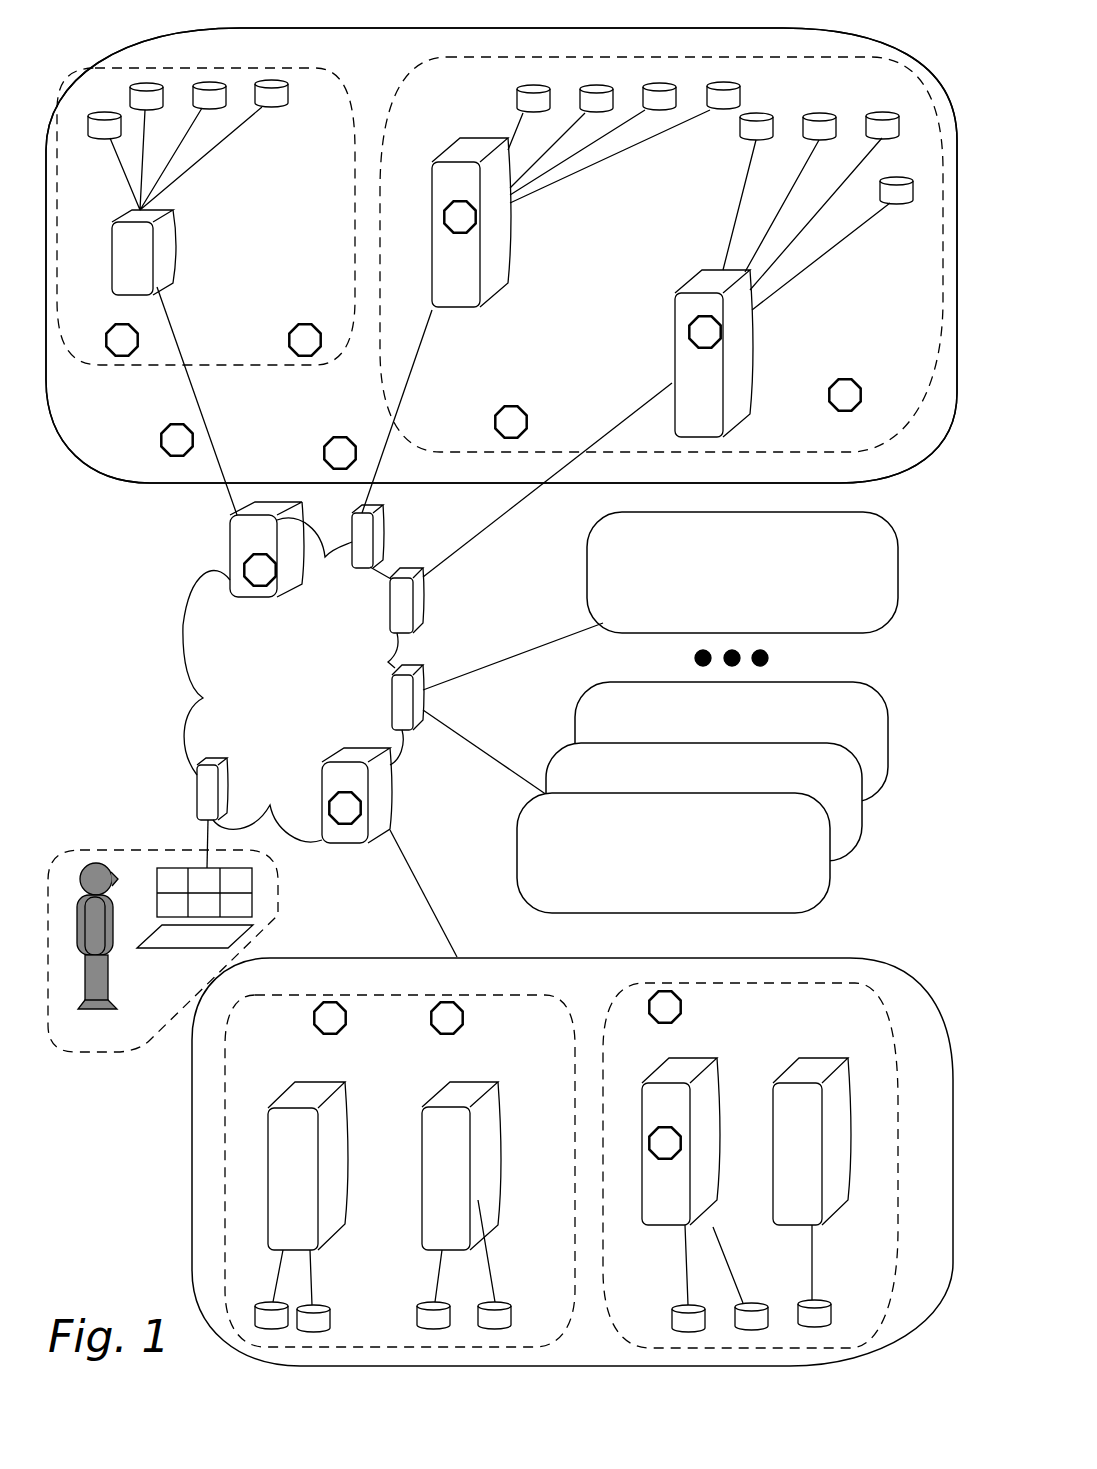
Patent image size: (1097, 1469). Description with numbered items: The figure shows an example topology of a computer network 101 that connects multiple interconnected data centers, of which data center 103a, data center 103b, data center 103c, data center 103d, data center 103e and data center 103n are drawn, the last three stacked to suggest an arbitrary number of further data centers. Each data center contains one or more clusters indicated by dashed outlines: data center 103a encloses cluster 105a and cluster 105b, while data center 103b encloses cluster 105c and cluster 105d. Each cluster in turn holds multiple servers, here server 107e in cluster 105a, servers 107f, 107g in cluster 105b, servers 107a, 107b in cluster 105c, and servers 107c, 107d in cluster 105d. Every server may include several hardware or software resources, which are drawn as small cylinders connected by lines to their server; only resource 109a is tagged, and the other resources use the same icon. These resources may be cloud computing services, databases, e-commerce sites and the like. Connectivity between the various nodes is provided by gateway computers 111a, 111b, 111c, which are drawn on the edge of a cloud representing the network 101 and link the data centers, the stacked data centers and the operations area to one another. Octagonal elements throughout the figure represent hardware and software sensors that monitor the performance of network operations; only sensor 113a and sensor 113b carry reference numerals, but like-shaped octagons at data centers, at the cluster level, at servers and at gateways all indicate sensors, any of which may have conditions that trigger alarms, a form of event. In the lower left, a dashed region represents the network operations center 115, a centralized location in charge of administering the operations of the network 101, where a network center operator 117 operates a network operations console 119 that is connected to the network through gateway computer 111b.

The network 101 is at (100, 25).
The data center 103a is at (137, 470).
The data center 103b is at (192, 1205).
The data center 103c is at (673, 853).
The data center 103d is at (704, 802).
The data center 103e is at (731, 742).
The data center 103n is at (742, 572).
The cluster 105a is at (162, 363).
The cluster 105b is at (377, 358).
The cluster 105c is at (220, 1130).
The cluster 105d is at (842, 985).
The server 107a is at (310, 1083).
The server 107b is at (465, 1083).
The server 107c is at (682, 1055).
The server 107d is at (802, 1055).
The server 107e is at (173, 237).
The server 107f is at (508, 262).
The server 107g is at (675, 360).
The resource 109a is at (280, 82).
The gateway computer 111a is at (232, 585).
The gateway computer 111b is at (200, 768).
The gateway computer 111c is at (347, 843).
The sensor 113a is at (852, 412).
The sensor 113b is at (393, 803).
The network operations center 115 is at (137, 1048).
The network center operator 117 is at (84, 873).
The network operations console 119 is at (253, 927).